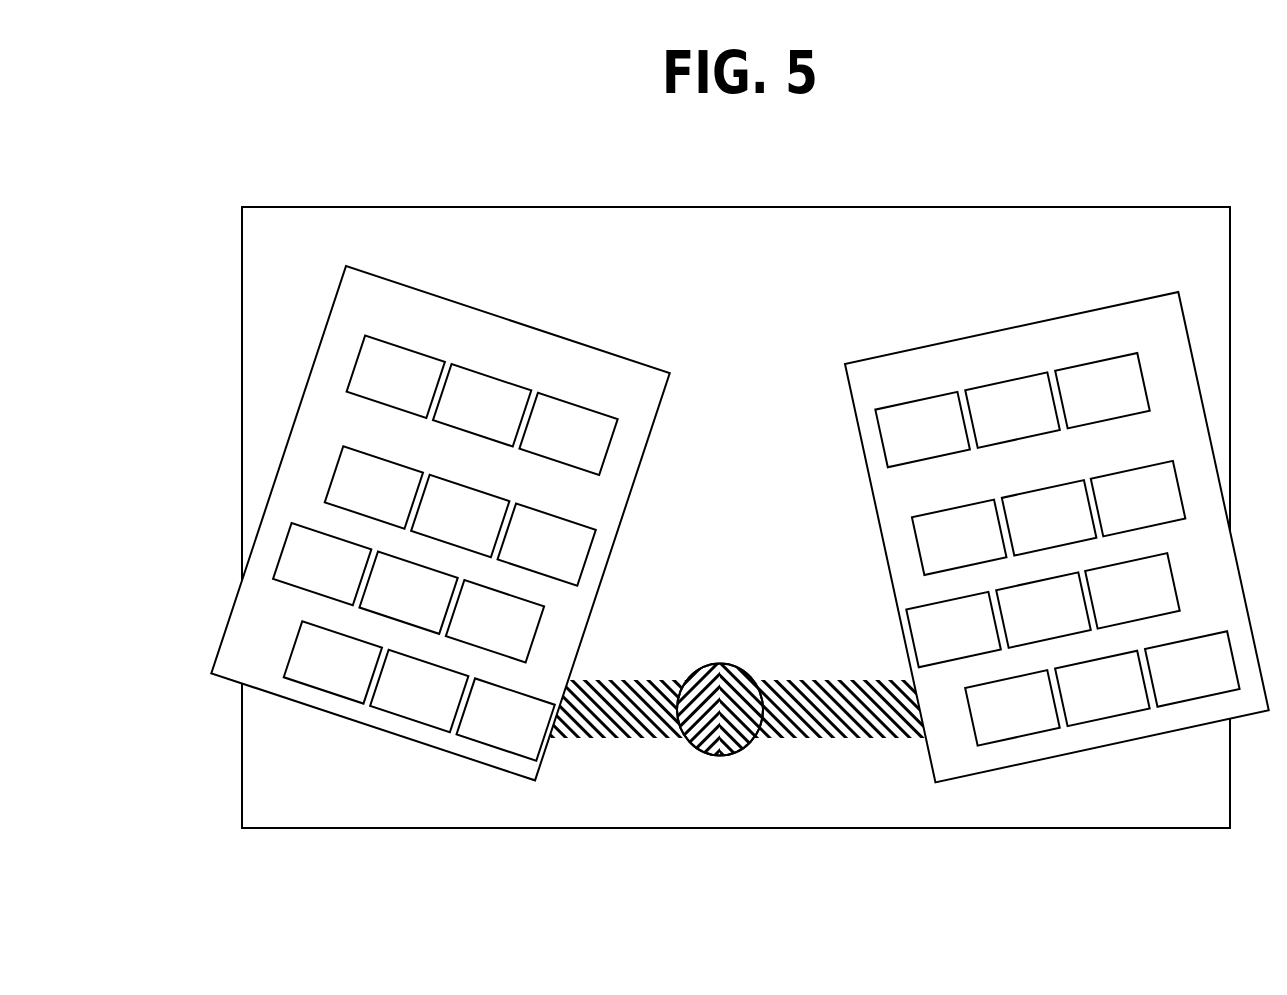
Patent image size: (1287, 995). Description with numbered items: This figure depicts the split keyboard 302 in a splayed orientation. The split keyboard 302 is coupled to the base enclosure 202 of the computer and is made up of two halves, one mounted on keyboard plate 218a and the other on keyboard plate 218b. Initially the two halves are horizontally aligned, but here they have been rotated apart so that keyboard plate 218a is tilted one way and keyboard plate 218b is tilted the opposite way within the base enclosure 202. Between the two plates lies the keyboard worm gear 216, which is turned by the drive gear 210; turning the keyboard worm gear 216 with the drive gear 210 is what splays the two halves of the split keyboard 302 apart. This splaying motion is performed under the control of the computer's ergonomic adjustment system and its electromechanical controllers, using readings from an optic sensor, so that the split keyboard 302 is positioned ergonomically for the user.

The split keyboard 302 is at (739, 486).
The base enclosure 202 is at (741, 265).
The keyboard plate 218a is at (440, 523).
The keyboard plate 218b is at (1057, 537).
The drive gear 210 is at (713, 663).
The keyboard worm gear 216 is at (622, 755).